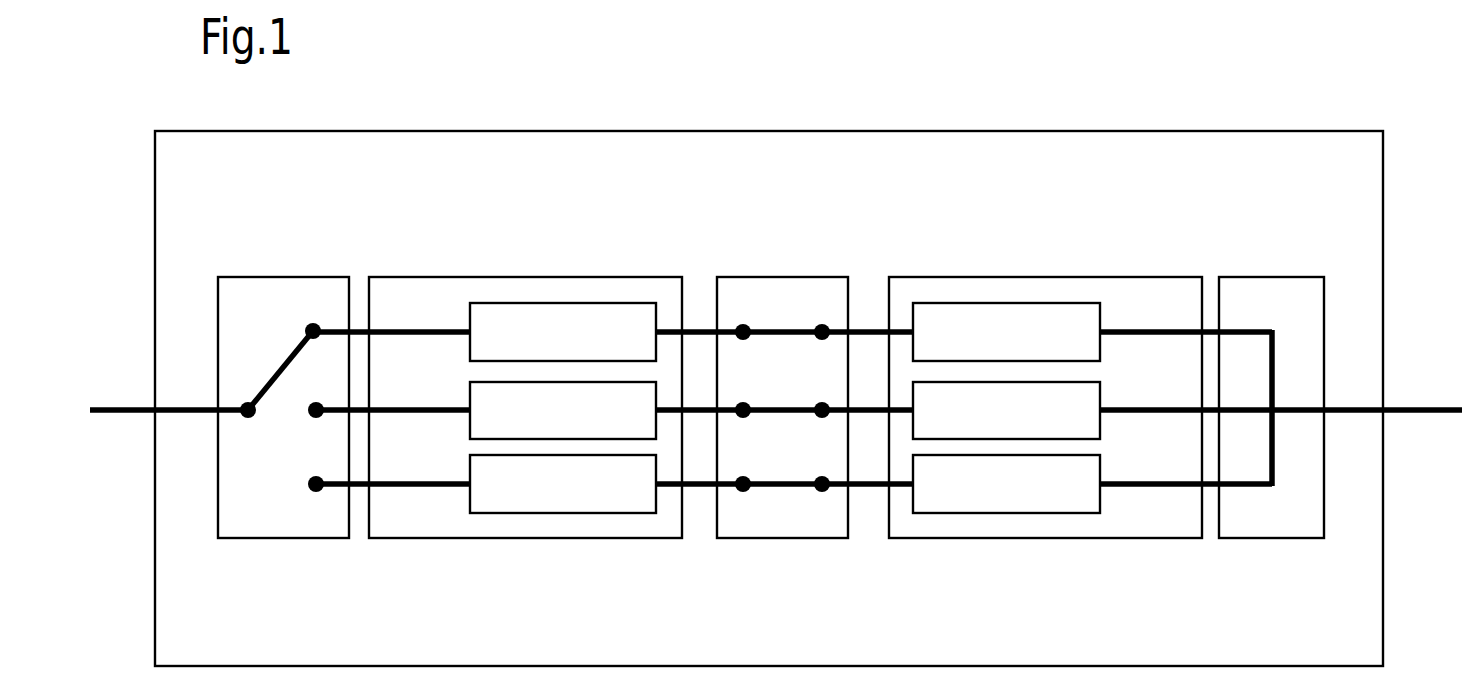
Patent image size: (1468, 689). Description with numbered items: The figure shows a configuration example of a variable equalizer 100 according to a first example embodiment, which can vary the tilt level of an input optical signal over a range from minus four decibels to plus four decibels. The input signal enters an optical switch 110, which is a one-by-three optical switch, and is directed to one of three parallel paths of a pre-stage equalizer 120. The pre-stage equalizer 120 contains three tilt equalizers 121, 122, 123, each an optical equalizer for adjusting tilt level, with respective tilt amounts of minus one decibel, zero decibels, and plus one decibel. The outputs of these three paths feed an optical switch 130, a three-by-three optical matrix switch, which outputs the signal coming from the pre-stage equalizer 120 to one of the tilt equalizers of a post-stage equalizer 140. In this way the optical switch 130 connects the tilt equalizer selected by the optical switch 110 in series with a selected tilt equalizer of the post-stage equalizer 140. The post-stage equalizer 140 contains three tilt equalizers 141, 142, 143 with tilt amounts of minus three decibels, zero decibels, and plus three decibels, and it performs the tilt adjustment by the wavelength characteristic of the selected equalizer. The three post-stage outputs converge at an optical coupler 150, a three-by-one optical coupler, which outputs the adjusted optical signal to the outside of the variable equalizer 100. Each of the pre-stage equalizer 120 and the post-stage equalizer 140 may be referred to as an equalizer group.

The variable equalizer 100 is at (638, 131).
The optical switch 110 is at (235, 277).
The pre-stage equalizer 120 is at (572, 212).
The tilt equalizer 121 is at (470, 315).
The tilt equalizer 122 is at (470, 392).
The tilt equalizer 123 is at (470, 467).
The optical switch 130 is at (762, 277).
The post-stage equalizer 140 is at (950, 238).
The tilt equalizer 141 is at (1100, 318).
The tilt equalizer 142 is at (1100, 395).
The tilt equalizer 143 is at (1100, 470).
The optical coupler 150 is at (1238, 276).